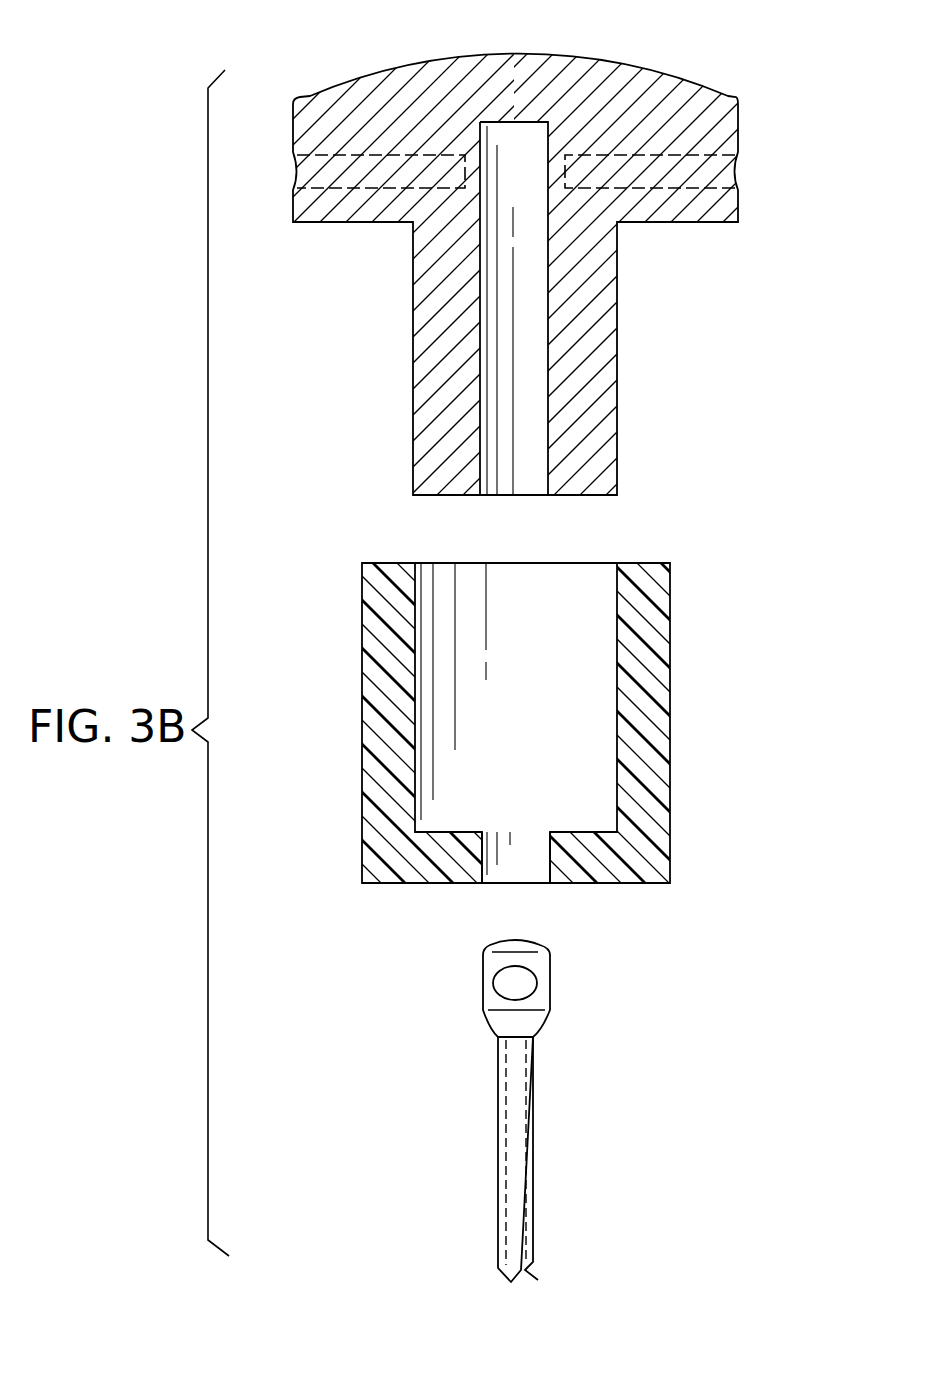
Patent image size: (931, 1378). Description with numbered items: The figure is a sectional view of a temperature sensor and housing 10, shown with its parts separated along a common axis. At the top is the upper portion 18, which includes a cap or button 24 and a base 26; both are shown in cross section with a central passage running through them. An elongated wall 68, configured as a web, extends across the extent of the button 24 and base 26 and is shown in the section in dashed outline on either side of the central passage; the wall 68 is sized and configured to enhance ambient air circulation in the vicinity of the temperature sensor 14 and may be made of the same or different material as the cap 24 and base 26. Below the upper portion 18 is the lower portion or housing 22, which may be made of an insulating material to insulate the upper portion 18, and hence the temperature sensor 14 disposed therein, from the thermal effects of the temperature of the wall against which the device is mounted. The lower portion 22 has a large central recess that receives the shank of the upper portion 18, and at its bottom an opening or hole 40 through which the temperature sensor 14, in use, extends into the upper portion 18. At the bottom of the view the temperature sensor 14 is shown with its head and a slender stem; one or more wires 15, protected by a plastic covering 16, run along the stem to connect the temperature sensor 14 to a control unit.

The temperature sensor and housing 10 is at (705, 481).
The temperature sensor 14 is at (533, 1118).
The wires 15 is at (514, 1112).
The plastic covering 16 is at (498, 1165).
The upper portion 18 is at (617, 360).
The lower portion or housing 22 is at (670, 712).
The cap or button 24 is at (357, 98).
The base 26 is at (353, 207).
The opening or hole 40 is at (548, 862).
The elongated wall 68 is at (313, 172).